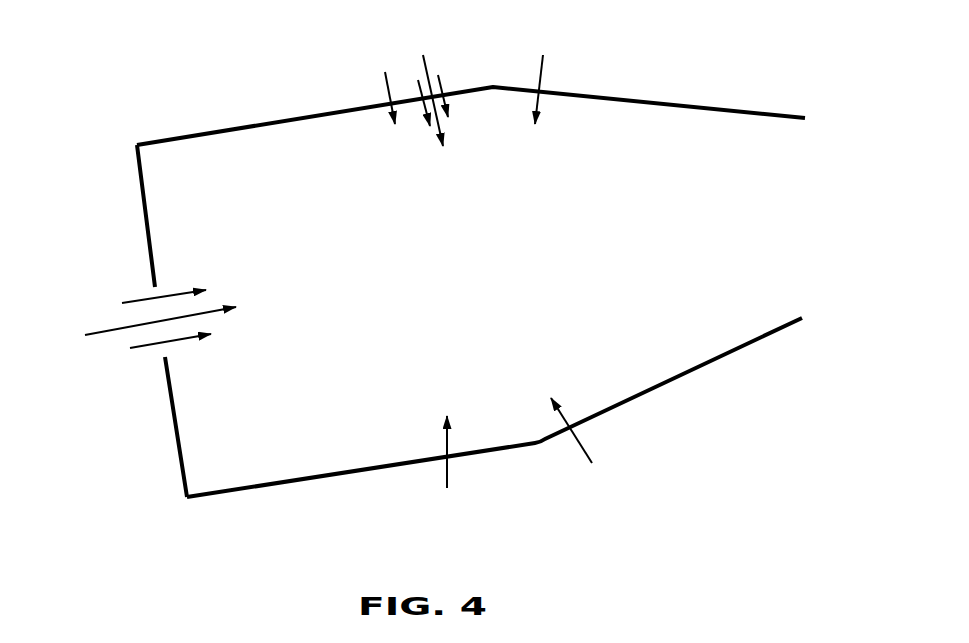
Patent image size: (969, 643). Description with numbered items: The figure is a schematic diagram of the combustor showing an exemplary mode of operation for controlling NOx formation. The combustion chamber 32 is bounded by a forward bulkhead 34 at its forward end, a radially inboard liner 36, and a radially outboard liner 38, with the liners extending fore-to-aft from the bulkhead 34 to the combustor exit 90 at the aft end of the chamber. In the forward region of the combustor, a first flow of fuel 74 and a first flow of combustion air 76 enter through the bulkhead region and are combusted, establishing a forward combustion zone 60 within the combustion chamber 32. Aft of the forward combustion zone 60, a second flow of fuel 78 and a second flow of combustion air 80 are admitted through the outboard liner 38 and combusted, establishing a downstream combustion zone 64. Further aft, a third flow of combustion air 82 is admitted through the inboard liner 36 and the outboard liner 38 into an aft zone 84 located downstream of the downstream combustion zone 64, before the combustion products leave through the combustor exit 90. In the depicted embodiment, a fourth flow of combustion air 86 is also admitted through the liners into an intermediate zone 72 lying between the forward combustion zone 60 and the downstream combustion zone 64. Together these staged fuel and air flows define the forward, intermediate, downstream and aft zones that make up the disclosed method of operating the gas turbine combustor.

The combustion chamber 32 is at (399, 396).
The bulkhead 34 is at (140, 192).
The inboard liner 36 is at (687, 372).
The outboard liner 38 is at (615, 97).
The forward combustion zone 60 is at (307, 309).
The downstream combustion zone 64 is at (510, 264).
The intermediate zone 72 is at (430, 278).
The first flow of fuel 74 is at (102, 330).
The first flow of combustion air 76 is at (138, 300).
The second flow of fuel 78 is at (430, 67).
The second flow of combustion air 80 is at (420, 90).
The third flow of combustion air 82 is at (547, 72).
The aft zone 84 is at (588, 246).
The fourth flow of combustion air 86 is at (385, 92).
The combustor exit 90 is at (812, 215).